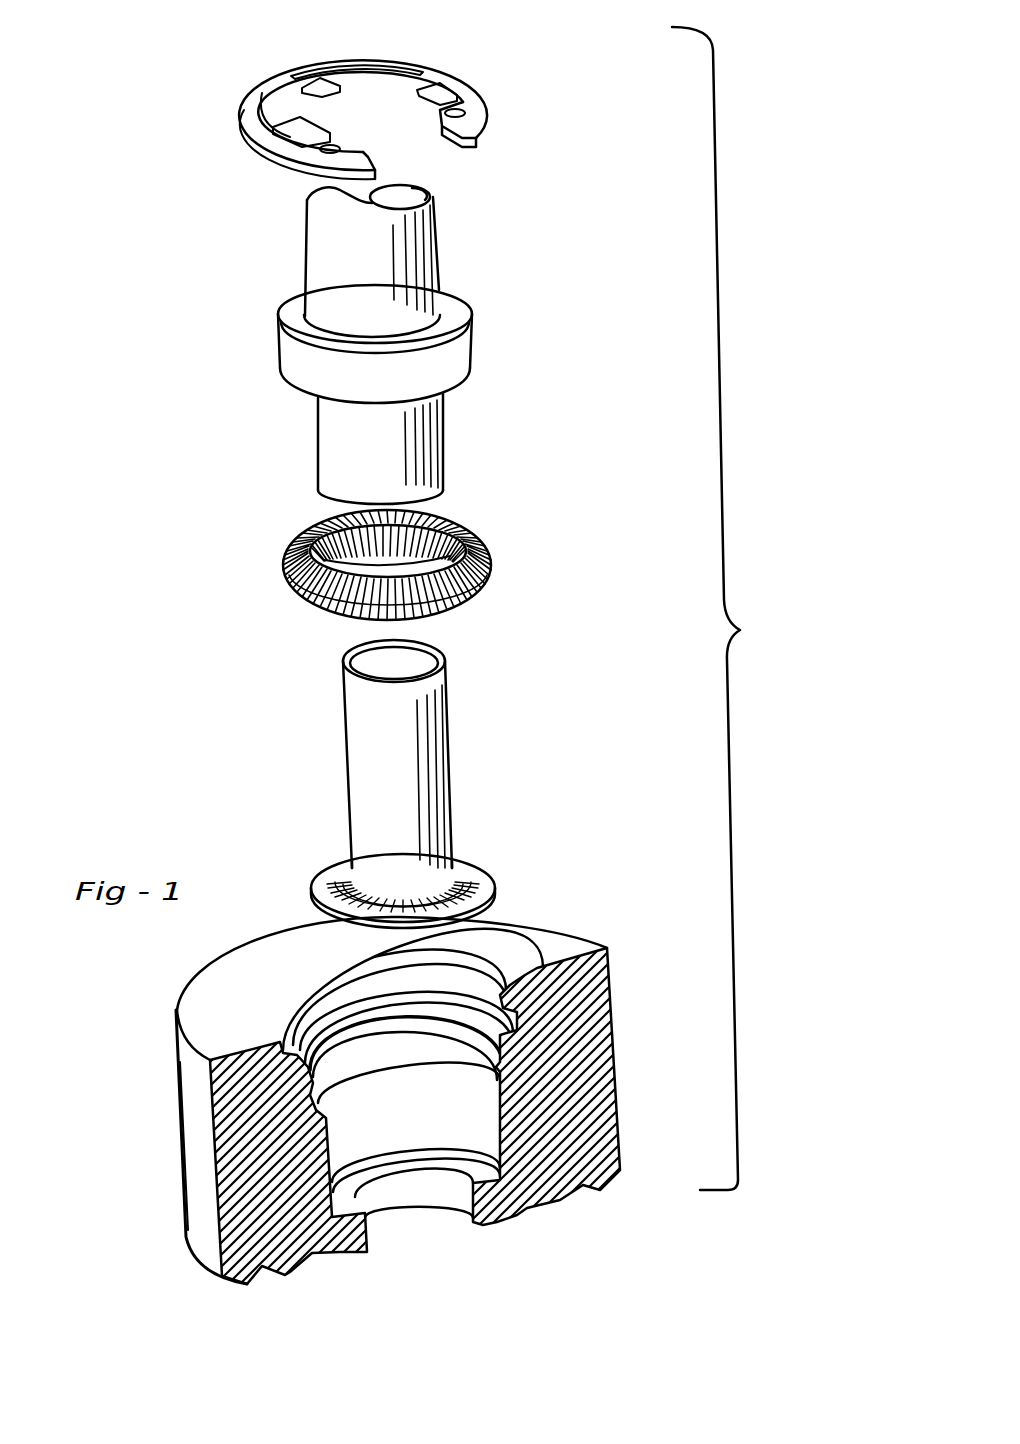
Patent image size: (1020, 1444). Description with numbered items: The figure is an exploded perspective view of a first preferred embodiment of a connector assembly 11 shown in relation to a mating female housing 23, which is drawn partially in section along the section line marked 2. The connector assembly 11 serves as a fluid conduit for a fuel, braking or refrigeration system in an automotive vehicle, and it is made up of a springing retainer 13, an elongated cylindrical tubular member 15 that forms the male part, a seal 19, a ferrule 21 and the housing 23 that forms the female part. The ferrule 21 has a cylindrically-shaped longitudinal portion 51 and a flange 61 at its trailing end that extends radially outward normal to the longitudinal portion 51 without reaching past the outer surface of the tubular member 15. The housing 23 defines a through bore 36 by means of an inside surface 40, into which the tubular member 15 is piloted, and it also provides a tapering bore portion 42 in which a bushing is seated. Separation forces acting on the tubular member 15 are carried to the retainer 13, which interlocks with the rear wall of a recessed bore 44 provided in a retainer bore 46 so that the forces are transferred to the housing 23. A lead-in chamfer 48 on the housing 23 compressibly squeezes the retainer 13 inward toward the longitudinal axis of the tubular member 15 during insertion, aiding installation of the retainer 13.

The section line 2- 2 is at (262, 27).
The connector assembly 11 is at (735, 608).
The retainer 13 is at (462, 97).
The tubular member 15 is at (440, 245).
The seal 19 is at (470, 530).
The ferrule 21 is at (462, 816).
The housing 23 is at (517, 912).
The through bore 36 is at (355, 1140).
The inside surface 40 is at (481, 1122).
The tapering bore portion 42 is at (500, 1068).
The recessed bore 44 is at (527, 1017).
The retainer bore 46 is at (520, 990).
The lead-in chamfer 48 is at (490, 986).
The longitudinal portion 51 is at (350, 834).
The flange 61 is at (482, 872).